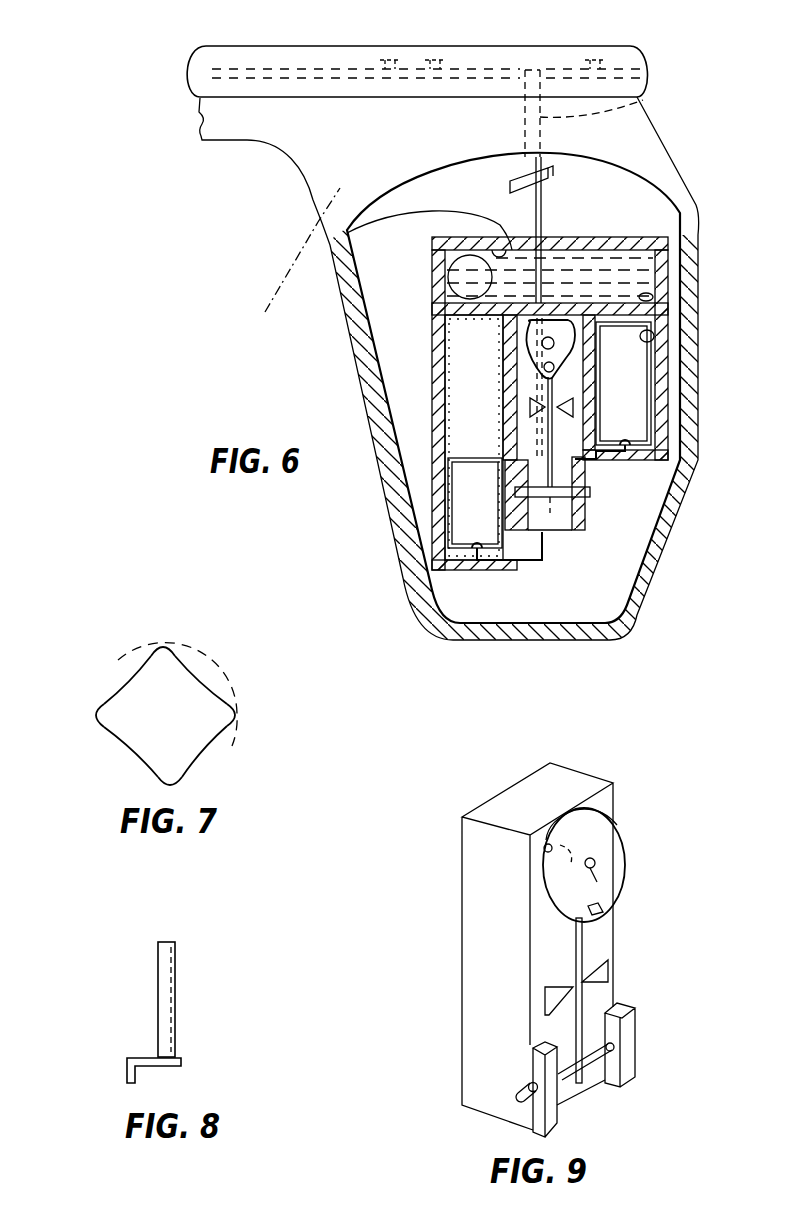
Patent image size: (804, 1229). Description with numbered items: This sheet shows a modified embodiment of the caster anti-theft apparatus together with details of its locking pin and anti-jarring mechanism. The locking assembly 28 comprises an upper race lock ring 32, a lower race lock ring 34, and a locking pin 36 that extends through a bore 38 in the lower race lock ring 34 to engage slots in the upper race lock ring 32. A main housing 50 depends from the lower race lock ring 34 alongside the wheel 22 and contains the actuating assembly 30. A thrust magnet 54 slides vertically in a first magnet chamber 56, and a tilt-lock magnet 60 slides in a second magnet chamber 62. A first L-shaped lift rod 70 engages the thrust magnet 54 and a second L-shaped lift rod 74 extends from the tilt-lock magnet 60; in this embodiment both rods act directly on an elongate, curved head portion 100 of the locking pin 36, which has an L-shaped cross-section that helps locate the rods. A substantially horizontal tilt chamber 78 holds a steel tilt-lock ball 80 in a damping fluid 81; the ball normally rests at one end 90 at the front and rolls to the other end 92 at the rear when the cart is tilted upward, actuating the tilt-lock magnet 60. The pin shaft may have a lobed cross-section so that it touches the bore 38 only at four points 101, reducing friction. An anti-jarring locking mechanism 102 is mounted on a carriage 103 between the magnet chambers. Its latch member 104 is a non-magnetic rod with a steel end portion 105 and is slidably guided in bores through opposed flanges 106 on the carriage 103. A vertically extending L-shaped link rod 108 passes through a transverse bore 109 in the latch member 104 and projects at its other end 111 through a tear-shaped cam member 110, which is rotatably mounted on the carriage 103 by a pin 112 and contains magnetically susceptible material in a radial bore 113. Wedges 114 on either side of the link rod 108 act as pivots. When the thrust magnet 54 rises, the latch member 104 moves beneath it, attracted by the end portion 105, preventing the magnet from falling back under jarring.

In FIG. 6, the wheel 22 is at (273, 286).
In FIG. 6, the locking assembly 28 is at (647, 38).
In FIG. 6, the actuating assembly 30 is at (672, 258).
In FIG. 6, the upper race lock ring 32 is at (296, 55).
In FIG. 6, the lower race lock ring 34 is at (245, 123).
In FIG. 6, the locking pin 36 is at (555, 158).
In FIG. 7, the locking pin 36 is at (133, 752).
In FIG. 8, the locking pin 36 is at (176, 993).
In FIG. 6, the bore 38 is at (643, 102).
In FIG. 7, the bore 38 is at (220, 666).
In FIG. 6, the main housing 50 is at (690, 196).
In FIG. 6, the thrust magnet 54 is at (460, 485).
In FIG. 6, the first magnet chamber 56 is at (510, 407).
In FIG. 6, the tilt-lock magnet 60 is at (647, 380).
In FIG. 6, the second magnet chamber 62 is at (655, 332).
In FIG. 6, the first L-shaped lift rod 70 is at (440, 582).
In FIG. 6, the second L-shaped lift rod 74 is at (617, 470).
In FIG. 6, the tilt chamber 78 is at (347, 233).
In FIG. 6, the tilt-lock ball 80 is at (440, 290).
In FIG. 6, the damping fluid 81 is at (637, 280).
In FIG. 6, the one end of tilt chamber 90 is at (352, 262).
In FIG. 6, the other end of tilt chamber 92 is at (655, 298).
In FIG. 6, the head portion 100 is at (553, 178).
In FIG. 8, the head portion 100 is at (148, 1068).
In FIG. 7, the points 101 is at (165, 642).
In FIG. 6, the anti-jarring locking mechanism 102 is at (600, 490).
In FIG. 9, the anti-jarring locking mechanism 102 is at (640, 777).
In FIG. 6, the carriage 103 is at (565, 525).
In FIG. 9, the carriage 103 is at (465, 923).
In FIG. 9, the latch member 104 is at (612, 1052).
In FIG. 6, the end portion 105 is at (510, 493).
In FIG. 9, the end portion 105 is at (522, 1098).
In FIG. 9, the flanges 106 is at (541, 1115).
In FIG. 6, the L-shaped link rod 108 is at (573, 430).
In FIG. 9, the L-shaped link rod 108 is at (583, 940).
In FIG. 9, the transverse bore 109 is at (588, 1067).
In FIG. 9, the cam member 110 is at (624, 856).
In FIG. 6, the other end of link rod 111 is at (538, 372).
In FIG. 9, the other end of link rod 111 is at (598, 905).
In FIG. 6, the pin 112 is at (538, 328).
In FIG. 9, the pin 112 is at (592, 855).
In FIG. 6, the radial bore 113 is at (545, 348).
In FIG. 9, the radial bore 113 is at (565, 862).
In FIG. 6, the wedges 114 is at (528, 410).
In FIG. 9, the wedges 114 is at (608, 966).